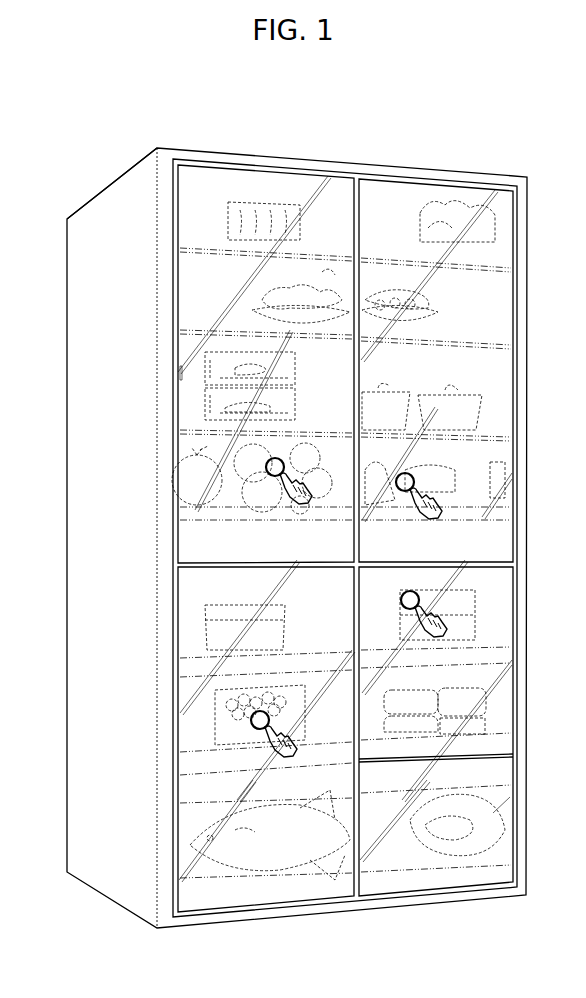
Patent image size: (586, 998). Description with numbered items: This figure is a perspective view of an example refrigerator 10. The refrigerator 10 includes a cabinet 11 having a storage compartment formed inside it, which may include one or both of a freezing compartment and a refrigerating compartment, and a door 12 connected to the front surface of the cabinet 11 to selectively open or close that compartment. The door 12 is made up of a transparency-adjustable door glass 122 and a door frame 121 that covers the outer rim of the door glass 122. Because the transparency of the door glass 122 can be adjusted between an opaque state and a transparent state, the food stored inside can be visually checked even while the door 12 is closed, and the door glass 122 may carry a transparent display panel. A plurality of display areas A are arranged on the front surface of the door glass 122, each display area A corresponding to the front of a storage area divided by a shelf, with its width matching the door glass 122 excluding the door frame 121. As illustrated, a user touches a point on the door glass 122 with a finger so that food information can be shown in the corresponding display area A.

The refrigerator 10 is at (409, 130).
The cabinet 11 is at (111, 182).
The door 12 is at (235, 110).
The door frame 121 is at (235, 172).
The door glass 122 is at (287, 193).
The display area A is at (180, 374).